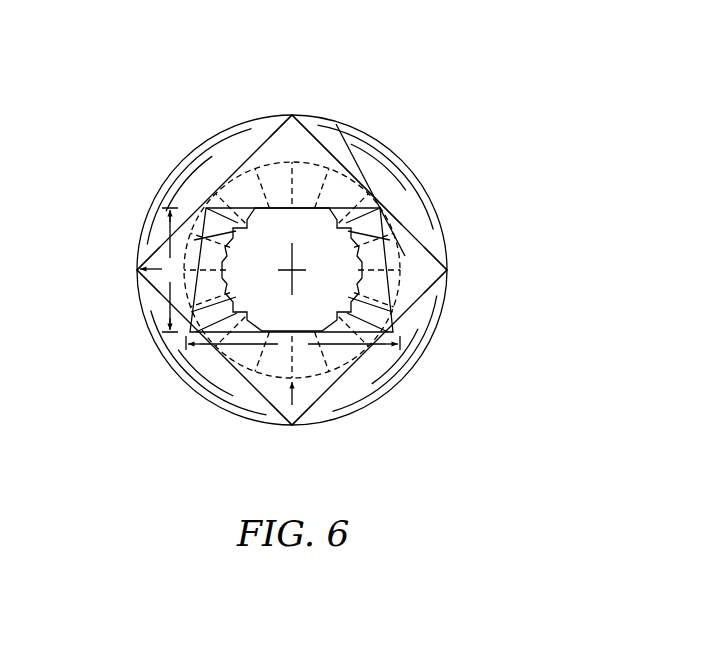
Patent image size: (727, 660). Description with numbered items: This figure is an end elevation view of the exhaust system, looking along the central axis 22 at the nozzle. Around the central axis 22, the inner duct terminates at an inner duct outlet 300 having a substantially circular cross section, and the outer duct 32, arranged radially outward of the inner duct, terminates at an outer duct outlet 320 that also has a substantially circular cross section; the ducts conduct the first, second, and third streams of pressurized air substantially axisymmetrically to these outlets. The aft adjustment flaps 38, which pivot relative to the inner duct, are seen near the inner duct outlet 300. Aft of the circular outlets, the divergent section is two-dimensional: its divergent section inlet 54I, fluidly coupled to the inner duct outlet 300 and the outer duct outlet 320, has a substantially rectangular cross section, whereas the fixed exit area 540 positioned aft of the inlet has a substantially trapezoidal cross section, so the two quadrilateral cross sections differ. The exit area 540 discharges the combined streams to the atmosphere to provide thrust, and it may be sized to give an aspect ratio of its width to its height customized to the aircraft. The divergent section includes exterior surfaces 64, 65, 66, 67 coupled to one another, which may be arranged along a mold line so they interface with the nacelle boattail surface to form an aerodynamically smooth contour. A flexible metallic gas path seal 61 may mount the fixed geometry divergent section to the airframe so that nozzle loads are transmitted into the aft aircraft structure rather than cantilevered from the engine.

The central axis 22 is at (294, 272).
The outer duct 32 is at (189, 149).
The aft adjustment flaps 38 is at (341, 190).
The divergent section inlet 54I is at (327, 140).
The exit area 540 is at (390, 240).
The seal 61 is at (392, 212).
The exterior surface 64 is at (279, 148).
The exterior surface 65 is at (290, 424).
The exterior surface 66 is at (136, 268).
The exterior surface 67 is at (211, 191).
The inner duct outlet 300 is at (348, 180).
The outer duct outlet 320 is at (304, 148).